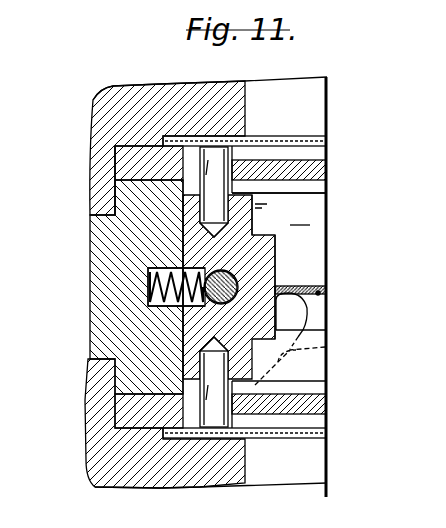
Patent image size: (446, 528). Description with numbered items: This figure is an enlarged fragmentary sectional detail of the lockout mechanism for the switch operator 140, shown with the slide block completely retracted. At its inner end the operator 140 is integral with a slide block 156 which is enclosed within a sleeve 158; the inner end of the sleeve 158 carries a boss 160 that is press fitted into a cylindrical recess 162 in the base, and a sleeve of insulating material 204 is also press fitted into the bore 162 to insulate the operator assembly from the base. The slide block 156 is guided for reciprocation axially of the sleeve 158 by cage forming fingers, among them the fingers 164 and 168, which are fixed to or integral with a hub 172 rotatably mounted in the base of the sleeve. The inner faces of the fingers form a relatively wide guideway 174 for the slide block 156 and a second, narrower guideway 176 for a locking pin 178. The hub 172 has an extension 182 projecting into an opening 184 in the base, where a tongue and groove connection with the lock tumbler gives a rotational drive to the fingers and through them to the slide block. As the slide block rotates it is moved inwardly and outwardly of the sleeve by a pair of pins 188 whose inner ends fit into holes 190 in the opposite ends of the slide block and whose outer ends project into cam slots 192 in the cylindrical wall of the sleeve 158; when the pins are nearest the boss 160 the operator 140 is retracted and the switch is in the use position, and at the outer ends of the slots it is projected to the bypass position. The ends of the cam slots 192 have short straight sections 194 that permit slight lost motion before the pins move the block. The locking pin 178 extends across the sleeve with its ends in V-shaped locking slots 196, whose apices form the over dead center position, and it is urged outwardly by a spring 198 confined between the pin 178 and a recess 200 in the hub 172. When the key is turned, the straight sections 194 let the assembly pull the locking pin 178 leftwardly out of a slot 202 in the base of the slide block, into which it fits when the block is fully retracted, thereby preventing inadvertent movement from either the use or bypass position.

The switch operator 140 is at (276, 253).
The slide block 156 is at (326, 208).
The sleeve 158 is at (328, 171).
The boss 160 is at (142, 158).
The cylindrical recess 162 is at (128, 150).
The cage forming finger 164 is at (300, 204).
The cage forming finger 168 is at (318, 360).
The hub 172 is at (114, 404).
The guideway 174 is at (313, 227).
The second guideway 176 is at (327, 293).
The locking pin 178 is at (276, 273).
The extension 182 is at (92, 344).
The opening 184 is at (93, 238).
The pins 188 is at (250, 148).
The holes 190 is at (212, 213).
The cam slots 192 is at (325, 347).
The straight sections 194 is at (296, 306).
The V-shaped locking slots 196 is at (196, 233).
The spring 198 is at (178, 287).
The recess 200 is at (160, 280).
The slot 202 is at (170, 258).
The sleeve of insulating material 204 is at (318, 437).